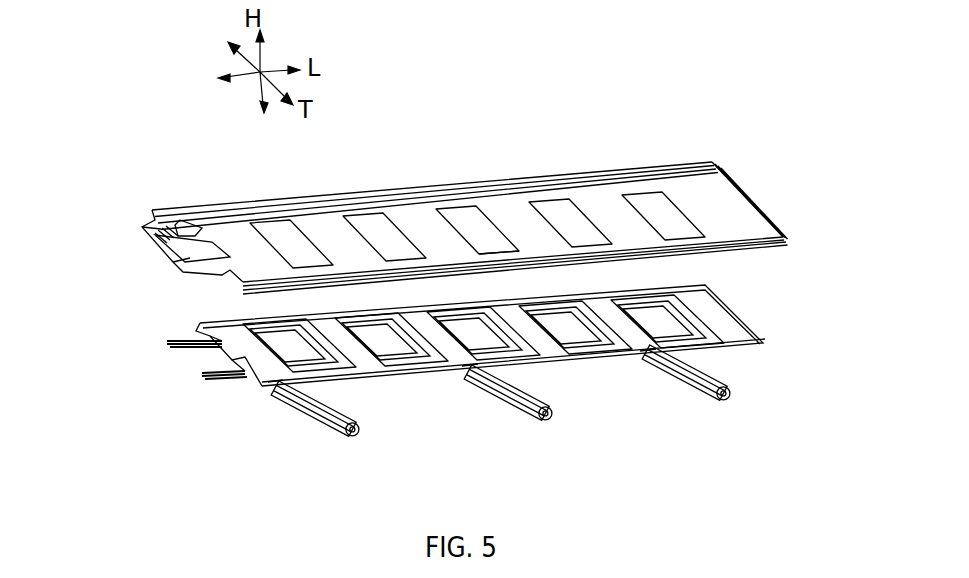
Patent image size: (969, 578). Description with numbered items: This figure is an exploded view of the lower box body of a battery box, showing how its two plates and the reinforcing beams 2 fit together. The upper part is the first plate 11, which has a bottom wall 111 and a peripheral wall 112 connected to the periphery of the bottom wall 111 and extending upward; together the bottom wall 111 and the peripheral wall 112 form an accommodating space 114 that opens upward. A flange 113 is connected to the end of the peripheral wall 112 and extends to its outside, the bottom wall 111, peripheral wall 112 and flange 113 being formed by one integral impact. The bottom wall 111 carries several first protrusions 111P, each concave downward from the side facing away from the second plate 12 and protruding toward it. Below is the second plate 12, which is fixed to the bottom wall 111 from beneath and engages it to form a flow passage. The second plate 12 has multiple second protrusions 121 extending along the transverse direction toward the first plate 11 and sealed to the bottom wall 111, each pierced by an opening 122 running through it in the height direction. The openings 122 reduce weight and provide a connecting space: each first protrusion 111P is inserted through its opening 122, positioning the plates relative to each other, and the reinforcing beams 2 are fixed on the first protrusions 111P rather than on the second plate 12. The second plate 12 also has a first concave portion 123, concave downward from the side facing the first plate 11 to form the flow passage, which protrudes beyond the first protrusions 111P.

The first plate 11 is at (460, 199).
The bottom wall 111 is at (155, 178).
The first protrusion 111P is at (470, 225).
The peripheral wall 112 is at (787, 241).
The flange 113 is at (787, 226).
The accommodating space 114 is at (528, 222).
The second plate 12 is at (427, 354).
The second protrusion 121 is at (250, 320).
The opening 122 is at (400, 355).
The first concave portion 123 is at (355, 372).
The reinforcing beam 2 is at (300, 425).